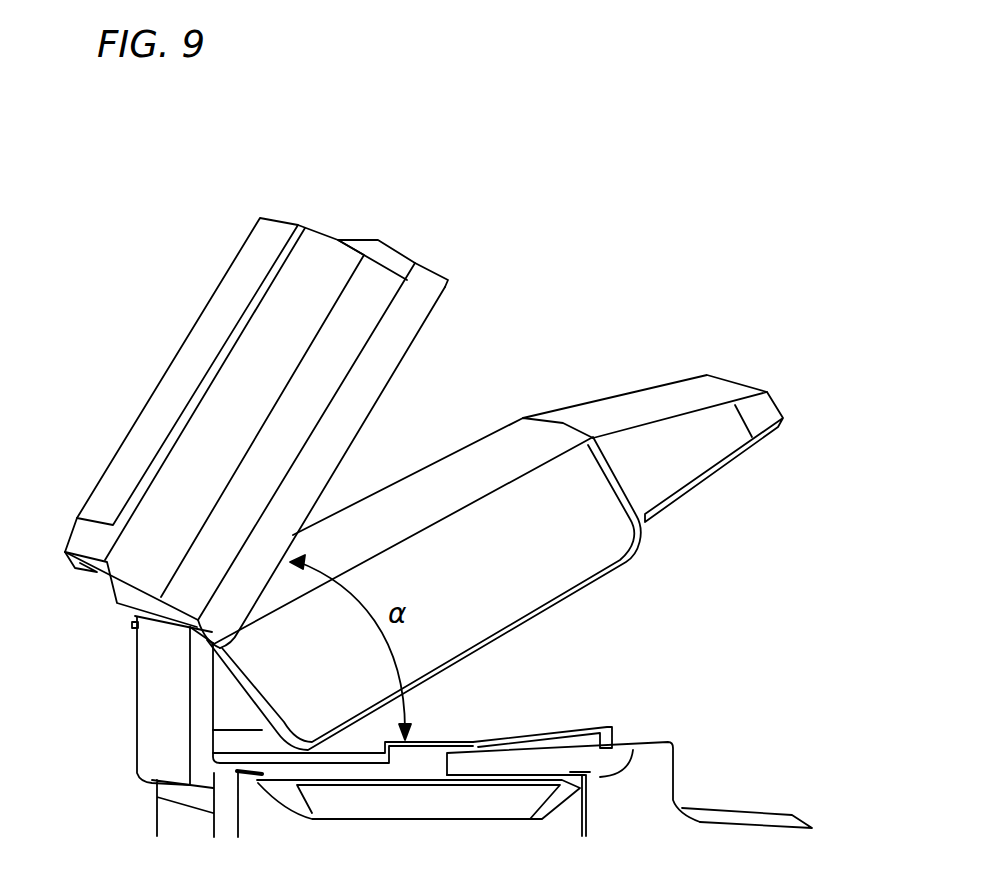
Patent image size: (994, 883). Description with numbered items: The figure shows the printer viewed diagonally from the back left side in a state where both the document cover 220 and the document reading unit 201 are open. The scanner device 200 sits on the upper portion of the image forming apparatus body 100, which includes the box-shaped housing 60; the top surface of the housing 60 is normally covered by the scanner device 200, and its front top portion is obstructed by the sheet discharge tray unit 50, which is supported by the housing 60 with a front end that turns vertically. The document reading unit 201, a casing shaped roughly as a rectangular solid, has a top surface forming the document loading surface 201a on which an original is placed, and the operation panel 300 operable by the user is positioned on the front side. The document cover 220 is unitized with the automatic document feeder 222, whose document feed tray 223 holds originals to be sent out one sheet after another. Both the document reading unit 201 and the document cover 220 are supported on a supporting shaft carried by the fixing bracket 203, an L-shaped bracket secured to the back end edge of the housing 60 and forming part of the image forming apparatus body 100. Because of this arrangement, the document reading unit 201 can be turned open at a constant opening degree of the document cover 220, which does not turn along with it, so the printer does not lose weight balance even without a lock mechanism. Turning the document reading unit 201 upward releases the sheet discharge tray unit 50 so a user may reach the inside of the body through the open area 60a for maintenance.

The scanner device 200 is at (255, 403).
The document cover 220 is at (381, 250).
The automatic document feeder 222 is at (318, 246).
The document feed tray 223 is at (166, 380).
The document reading unit 201 is at (424, 568).
The document loading surface 201a is at (443, 482).
The fixing bracket 203 is at (160, 735).
The operation panel 300 is at (690, 390).
The housing 60 is at (604, 730).
The open area 60a is at (583, 703).
The image forming apparatus body 100 is at (747, 768).
The sheet discharge tray unit 50 is at (768, 806).